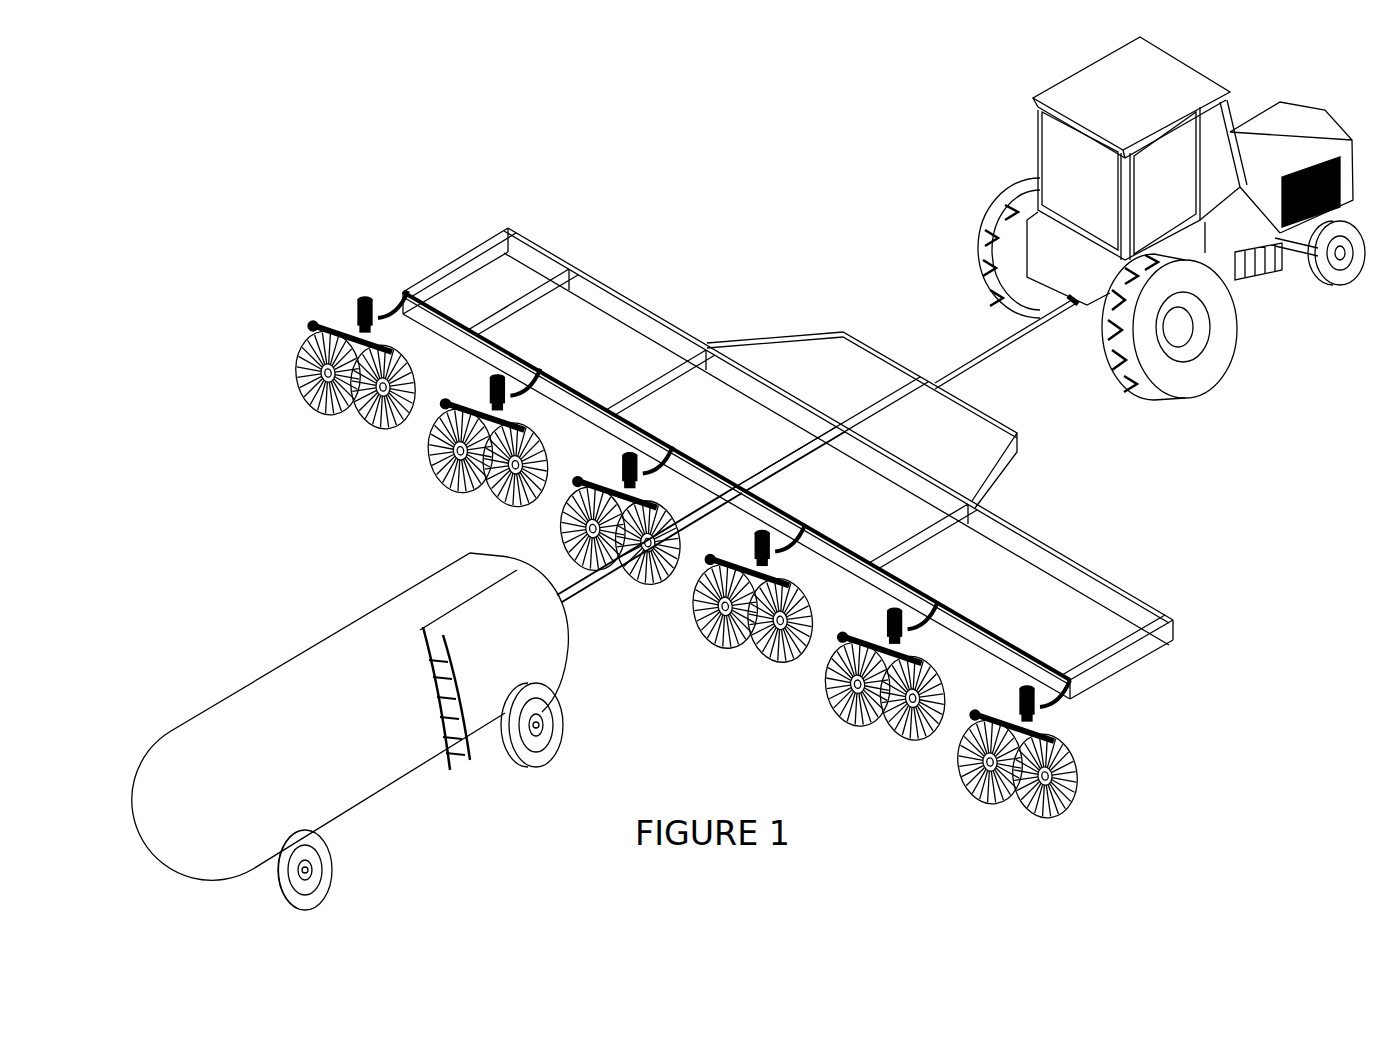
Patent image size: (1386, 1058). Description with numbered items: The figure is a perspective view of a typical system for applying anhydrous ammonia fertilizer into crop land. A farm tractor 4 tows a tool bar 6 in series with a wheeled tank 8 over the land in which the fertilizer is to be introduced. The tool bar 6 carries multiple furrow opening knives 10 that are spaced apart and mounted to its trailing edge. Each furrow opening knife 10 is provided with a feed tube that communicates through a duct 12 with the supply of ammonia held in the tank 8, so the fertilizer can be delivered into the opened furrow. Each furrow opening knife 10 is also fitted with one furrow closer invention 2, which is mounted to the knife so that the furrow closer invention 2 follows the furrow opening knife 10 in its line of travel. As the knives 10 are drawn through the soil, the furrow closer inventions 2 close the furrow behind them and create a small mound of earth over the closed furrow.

The furrow closer invention 2 is at (1075, 800).
The farm tractor 4 is at (1233, 333).
The tool bar 6 is at (1140, 595).
The wheeled tank 8 is at (397, 783).
The furrow opening knife 10 is at (393, 290).
The duct 12 is at (960, 613).